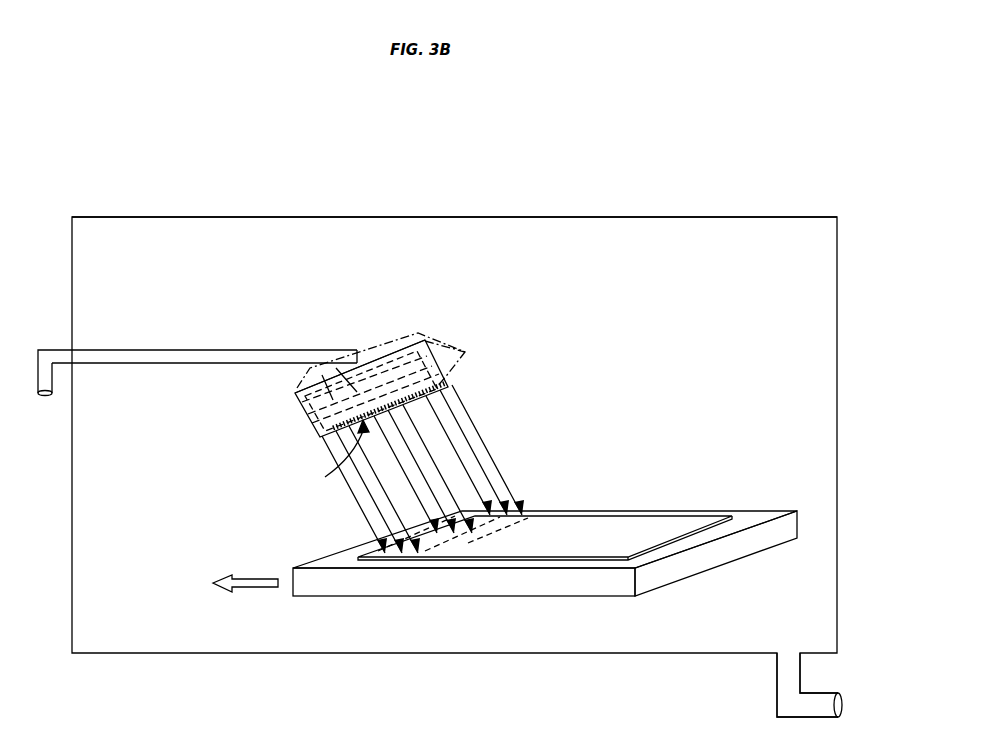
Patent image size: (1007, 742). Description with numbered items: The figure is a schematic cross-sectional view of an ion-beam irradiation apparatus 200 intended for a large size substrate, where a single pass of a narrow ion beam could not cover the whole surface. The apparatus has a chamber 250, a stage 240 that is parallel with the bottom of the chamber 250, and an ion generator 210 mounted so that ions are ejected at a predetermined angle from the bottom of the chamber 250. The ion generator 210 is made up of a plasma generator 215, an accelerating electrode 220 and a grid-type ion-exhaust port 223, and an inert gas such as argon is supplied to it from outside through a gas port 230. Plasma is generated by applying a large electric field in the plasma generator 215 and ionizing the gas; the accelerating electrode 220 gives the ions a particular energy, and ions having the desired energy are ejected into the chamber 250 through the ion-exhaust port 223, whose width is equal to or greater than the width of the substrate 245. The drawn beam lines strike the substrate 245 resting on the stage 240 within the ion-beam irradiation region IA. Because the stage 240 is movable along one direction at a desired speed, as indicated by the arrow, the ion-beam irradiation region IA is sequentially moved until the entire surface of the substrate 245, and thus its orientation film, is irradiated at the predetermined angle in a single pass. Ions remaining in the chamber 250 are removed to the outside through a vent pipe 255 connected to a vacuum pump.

The ion-beam irradiation apparatus 200 is at (661, 196).
The ion generator 210 is at (365, 340).
The plasma generator 215 is at (296, 396).
The accelerating electrode 220 is at (318, 429).
The ion-exhaust port 223 is at (336, 460).
The gas port 230 is at (173, 347).
The stage 240 is at (560, 574).
The substrate 245 is at (604, 532).
The chamber 250 is at (838, 315).
The vent pipe 255 is at (778, 684).
The ion-beam irradiation region IA is at (541, 517).